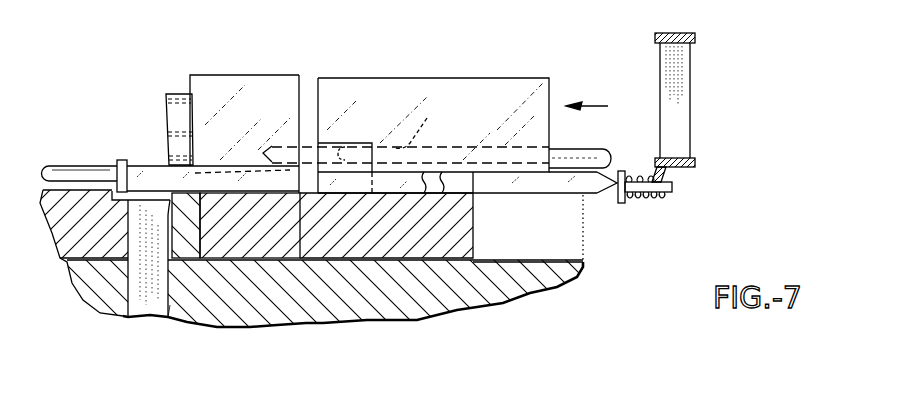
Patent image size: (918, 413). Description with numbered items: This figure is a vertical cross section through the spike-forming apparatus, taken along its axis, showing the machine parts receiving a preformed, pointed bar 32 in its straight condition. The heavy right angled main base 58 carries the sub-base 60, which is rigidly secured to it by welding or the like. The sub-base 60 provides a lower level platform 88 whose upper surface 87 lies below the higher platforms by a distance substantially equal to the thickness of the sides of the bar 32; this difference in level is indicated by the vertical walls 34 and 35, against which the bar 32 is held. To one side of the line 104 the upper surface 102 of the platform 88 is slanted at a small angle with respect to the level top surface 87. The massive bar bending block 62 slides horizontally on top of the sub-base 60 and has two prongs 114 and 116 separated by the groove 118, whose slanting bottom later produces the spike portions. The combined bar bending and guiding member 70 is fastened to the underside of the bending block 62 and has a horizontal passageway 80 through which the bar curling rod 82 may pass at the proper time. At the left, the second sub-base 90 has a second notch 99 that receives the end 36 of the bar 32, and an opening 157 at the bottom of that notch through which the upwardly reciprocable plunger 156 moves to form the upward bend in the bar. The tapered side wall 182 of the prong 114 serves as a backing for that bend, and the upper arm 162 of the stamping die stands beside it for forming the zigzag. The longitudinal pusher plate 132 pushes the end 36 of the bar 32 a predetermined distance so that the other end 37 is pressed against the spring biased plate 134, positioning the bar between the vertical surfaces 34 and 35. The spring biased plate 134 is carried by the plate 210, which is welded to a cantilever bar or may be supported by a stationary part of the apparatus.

The bar 32 is at (498, 193).
The vertical wall 34 is at (218, 196).
The vertical wall 35 is at (432, 173).
The end of bar 36 is at (152, 174).
The other end of bar 37 is at (590, 194).
The main base 58 is at (475, 297).
The sub-base 60 is at (476, 234).
The bar bending block 62 is at (183, 305).
The bar bending and guiding member 70 is at (343, 141).
The passageway 80 is at (425, 129).
The bar curling rod 82 is at (570, 138).
The upper surface of lower level platform 87 is at (407, 194).
The lower level platform 88 is at (395, 250).
The second sub-base 90 is at (72, 254).
The second notch 99 is at (113, 205).
The upper surface of platform 102 is at (245, 198).
The line 104 is at (292, 194).
The prong 114 is at (247, 93).
The prong 116 is at (382, 88).
The groove 118 is at (308, 92).
The pusher plate 132 is at (118, 160).
The spring biased plate 134 is at (622, 204).
The plunger 156 is at (150, 318).
The opening 157 is at (183, 308).
The upper arm of stamping die 162 is at (177, 107).
The side wall of prong 182 is at (193, 132).
The plate 210 is at (693, 34).